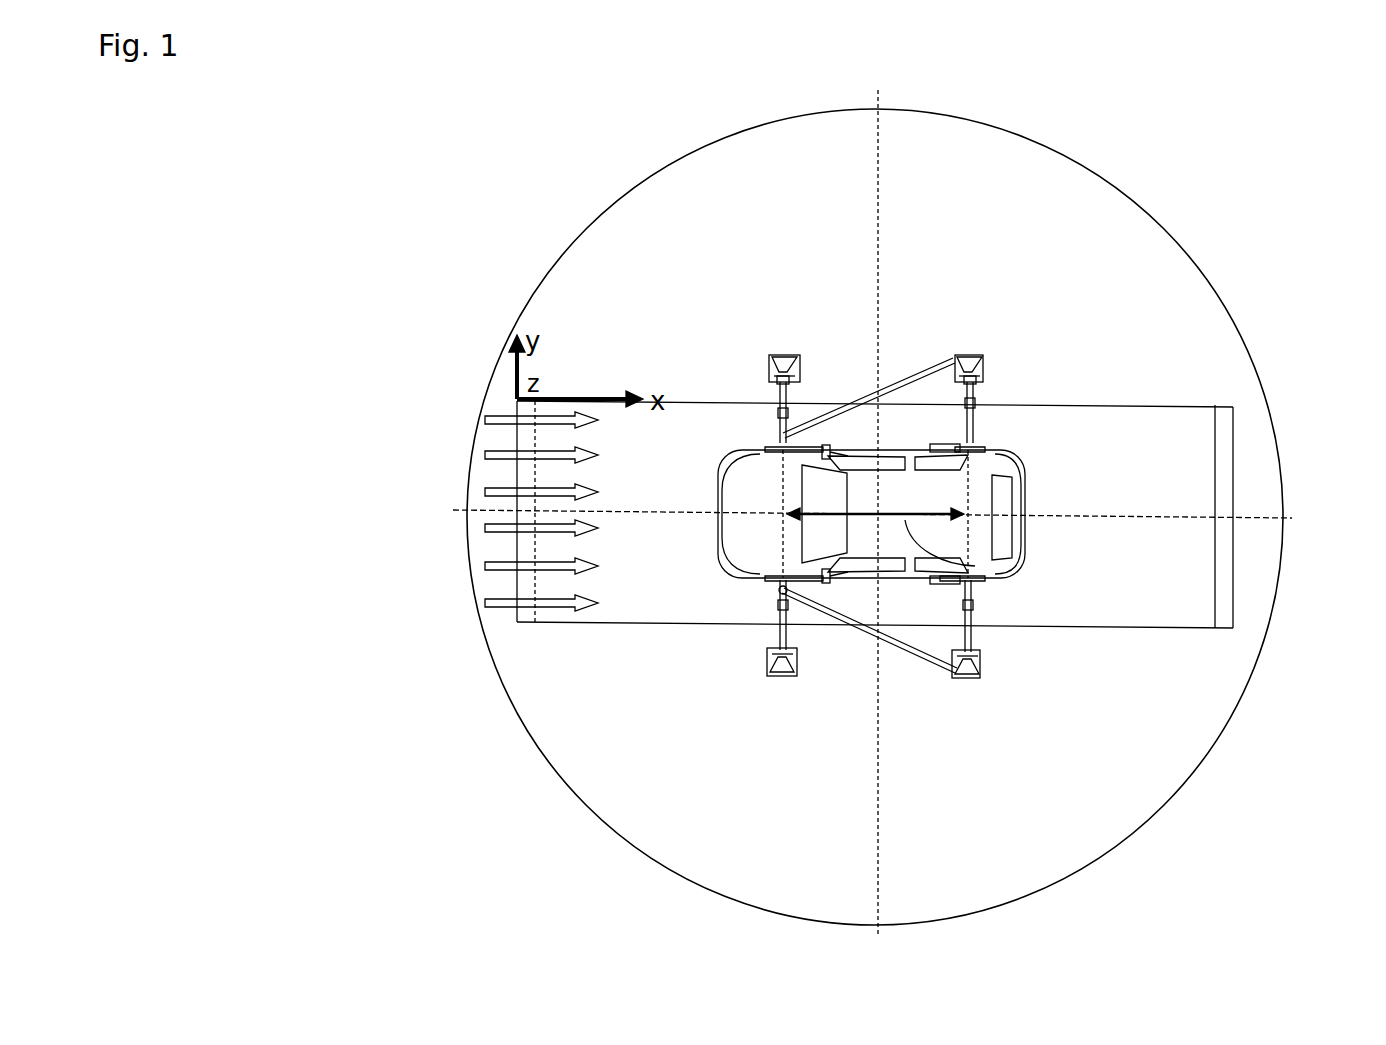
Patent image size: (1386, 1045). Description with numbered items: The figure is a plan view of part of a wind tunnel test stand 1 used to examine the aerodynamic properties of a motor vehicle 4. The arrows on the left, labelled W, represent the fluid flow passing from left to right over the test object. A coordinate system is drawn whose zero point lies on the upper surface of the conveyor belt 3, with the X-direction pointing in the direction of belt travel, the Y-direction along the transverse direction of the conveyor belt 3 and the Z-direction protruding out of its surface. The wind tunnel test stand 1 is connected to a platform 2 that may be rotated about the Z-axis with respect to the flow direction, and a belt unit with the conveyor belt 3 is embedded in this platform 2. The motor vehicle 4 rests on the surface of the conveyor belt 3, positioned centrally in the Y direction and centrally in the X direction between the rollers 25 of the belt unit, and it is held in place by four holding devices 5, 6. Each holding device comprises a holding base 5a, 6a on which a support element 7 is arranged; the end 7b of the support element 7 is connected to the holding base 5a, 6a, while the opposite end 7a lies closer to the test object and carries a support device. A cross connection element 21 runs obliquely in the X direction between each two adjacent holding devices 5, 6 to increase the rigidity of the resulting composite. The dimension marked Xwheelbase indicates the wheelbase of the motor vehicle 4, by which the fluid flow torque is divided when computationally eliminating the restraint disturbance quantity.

The wind tunnel test stand 1 is at (1255, 287).
The platform 2 is at (1030, 287).
The conveyor belt 3 is at (1128, 453).
The motor vehicle 4 is at (977, 490).
The holding device 5 is at (948, 350).
The holding base 5a is at (788, 360).
The holding device 6 is at (942, 686).
The holding base 6a is at (778, 675).
The support element 7 is at (778, 418).
The end of the support element 7a is at (782, 437).
The end of the support element 7b is at (773, 378).
The cross connection element 21 is at (893, 383).
The roller 25 is at (530, 622).
The wind flow W is at (495, 492).
The wheelbase Xwheelbase is at (907, 522).